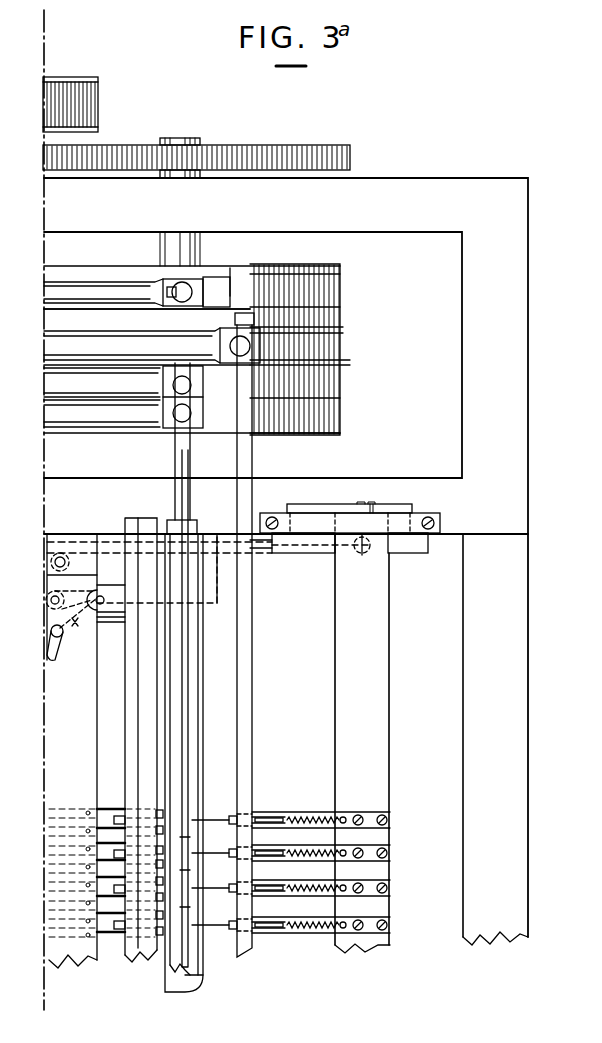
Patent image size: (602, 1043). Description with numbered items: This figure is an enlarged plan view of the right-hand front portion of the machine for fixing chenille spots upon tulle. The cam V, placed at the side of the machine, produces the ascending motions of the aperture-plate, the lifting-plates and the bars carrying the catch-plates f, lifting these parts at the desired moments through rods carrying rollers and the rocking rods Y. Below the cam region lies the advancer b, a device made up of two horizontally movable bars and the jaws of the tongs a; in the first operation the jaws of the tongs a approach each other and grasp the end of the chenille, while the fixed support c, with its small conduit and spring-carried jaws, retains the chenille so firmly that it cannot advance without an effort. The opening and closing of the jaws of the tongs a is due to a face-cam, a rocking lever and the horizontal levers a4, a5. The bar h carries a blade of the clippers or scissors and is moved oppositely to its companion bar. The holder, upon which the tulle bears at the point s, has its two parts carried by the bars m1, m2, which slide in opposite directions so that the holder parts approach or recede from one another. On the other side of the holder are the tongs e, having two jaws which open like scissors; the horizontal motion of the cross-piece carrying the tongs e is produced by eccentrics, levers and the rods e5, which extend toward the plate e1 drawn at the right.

The rocking rods Y is at (58, 292).
The cam V is at (147, 319).
The catch-plates f is at (244, 635).
The bar m2 is at (190, 665).
The bar m1 is at (175, 707).
The bar h is at (141, 740).
The advancer b is at (72, 751).
The horizontal lever a5 is at (52, 572).
The horizontal lever a4 is at (71, 625).
The tongs a is at (104, 809).
The fixed support c is at (119, 816).
The bearing point s is at (190, 765).
The tongs e is at (218, 818).
The contact plate e1 is at (350, 597).
The rods e5 is at (209, 559).